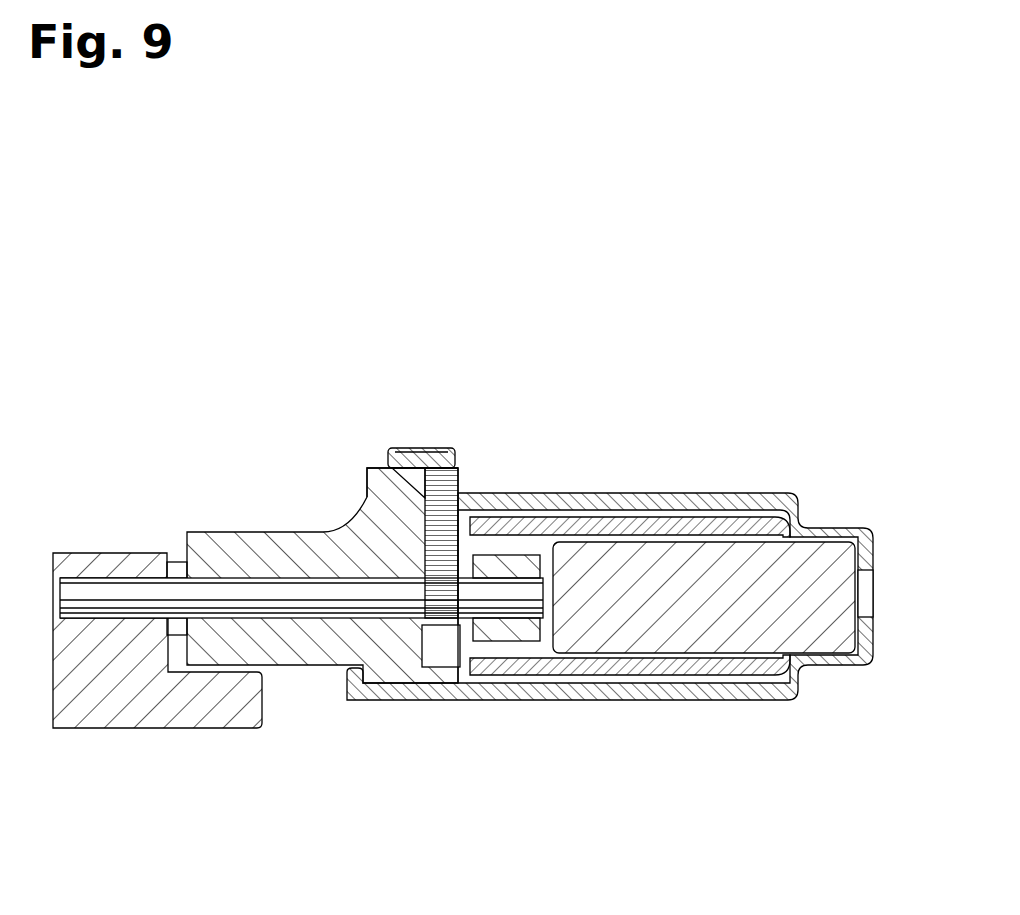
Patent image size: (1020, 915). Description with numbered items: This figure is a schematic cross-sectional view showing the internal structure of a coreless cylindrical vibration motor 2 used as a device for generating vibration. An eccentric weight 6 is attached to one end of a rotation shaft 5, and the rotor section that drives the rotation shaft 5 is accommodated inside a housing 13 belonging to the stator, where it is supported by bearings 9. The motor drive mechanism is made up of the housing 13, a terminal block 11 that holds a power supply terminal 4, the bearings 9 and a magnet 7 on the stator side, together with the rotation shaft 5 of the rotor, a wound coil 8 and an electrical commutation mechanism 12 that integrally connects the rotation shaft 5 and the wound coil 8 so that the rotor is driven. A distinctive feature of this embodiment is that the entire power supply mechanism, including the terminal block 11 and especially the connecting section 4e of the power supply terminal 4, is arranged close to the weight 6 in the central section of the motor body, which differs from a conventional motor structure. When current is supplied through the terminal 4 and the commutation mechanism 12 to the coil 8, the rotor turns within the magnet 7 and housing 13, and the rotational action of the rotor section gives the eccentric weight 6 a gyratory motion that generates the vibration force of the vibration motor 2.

The vibration motor 2 is at (598, 413).
The power supply terminal 4 is at (457, 450).
The connecting section 4e is at (423, 447).
The rotation shaft 5 is at (115, 592).
The eccentric weight 6 is at (128, 710).
The magnet 7 is at (710, 603).
The wound coil 8 is at (617, 680).
The bearings 9 is at (297, 527).
The terminal block 11 is at (372, 466).
The electrical commutation mechanism 12 is at (457, 650).
The housing 13 is at (648, 492).